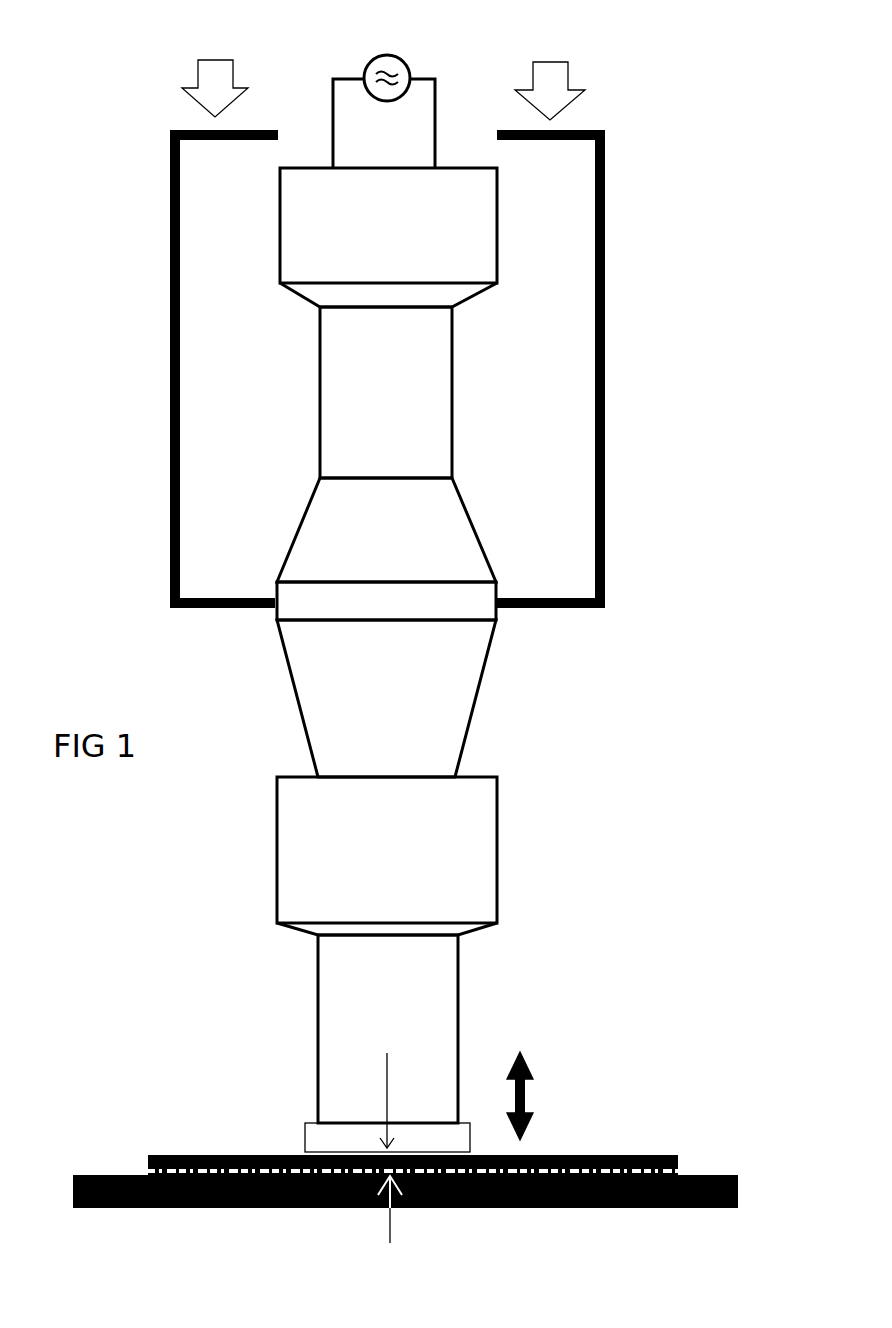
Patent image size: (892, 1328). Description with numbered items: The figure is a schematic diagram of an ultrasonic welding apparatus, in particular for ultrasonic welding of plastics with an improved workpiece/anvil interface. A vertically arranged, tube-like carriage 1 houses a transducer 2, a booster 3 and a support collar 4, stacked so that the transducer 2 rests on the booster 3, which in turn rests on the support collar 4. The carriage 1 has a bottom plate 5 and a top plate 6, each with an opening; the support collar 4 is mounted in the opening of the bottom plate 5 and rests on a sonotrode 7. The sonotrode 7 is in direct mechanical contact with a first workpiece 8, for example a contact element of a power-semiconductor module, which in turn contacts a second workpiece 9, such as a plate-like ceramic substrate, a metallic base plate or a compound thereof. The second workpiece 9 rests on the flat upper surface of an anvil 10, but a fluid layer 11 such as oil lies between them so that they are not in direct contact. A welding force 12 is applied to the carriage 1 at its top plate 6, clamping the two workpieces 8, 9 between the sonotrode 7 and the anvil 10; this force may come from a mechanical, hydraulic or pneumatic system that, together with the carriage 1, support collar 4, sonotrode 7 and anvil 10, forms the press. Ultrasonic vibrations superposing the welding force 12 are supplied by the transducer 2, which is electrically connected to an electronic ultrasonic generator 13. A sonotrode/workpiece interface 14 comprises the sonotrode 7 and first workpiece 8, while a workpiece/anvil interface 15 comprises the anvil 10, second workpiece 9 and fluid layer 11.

The carriage 1 is at (170, 488).
The transducer 2 is at (437, 295).
The booster 3 is at (440, 548).
The support collar 4 is at (460, 603).
The bottom plate 5 is at (232, 610).
The top plate 6 is at (580, 128).
The sonotrode 7 is at (442, 1052).
The first workpiece 8 is at (313, 1125).
The second workpiece 9 is at (235, 1153).
The anvil 10 is at (717, 1175).
The fluid layer 11 is at (148, 1168).
The welding force 12 is at (383, 72).
The electronic ultrasonic generator 13 is at (368, 62).
The sonotrode/workpiece interface 14 is at (389, 1083).
The workpiece/anvil interface 15 is at (390, 1230).